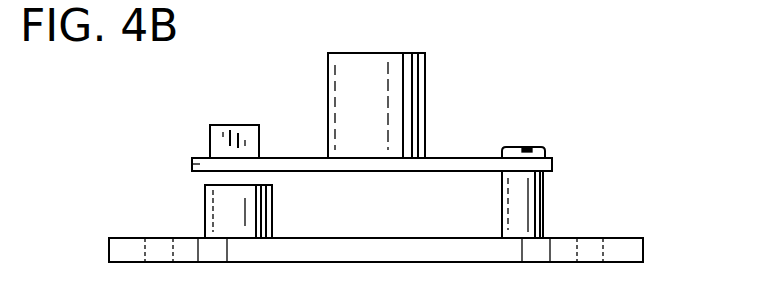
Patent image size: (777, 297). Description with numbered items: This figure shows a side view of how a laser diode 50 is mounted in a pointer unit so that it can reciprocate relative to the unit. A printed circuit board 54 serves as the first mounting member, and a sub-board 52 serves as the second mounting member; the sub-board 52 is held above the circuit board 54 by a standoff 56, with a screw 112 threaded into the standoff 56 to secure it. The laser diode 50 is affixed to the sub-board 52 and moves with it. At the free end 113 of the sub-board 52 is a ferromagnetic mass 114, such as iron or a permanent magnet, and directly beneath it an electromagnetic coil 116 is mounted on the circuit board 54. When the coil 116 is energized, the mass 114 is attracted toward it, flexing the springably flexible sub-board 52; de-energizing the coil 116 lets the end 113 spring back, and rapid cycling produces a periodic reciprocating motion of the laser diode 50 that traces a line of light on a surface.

The laser diode 50 is at (412, 95).
The sub-board 52 is at (552, 163).
The printed circuit board 54 is at (635, 250).
The standoff 56 is at (543, 200).
The screw 112 is at (532, 150).
The free end 113 is at (192, 162).
The ferromagnetic mass 114 is at (223, 124).
The electromagnetic coil 116 is at (207, 215).